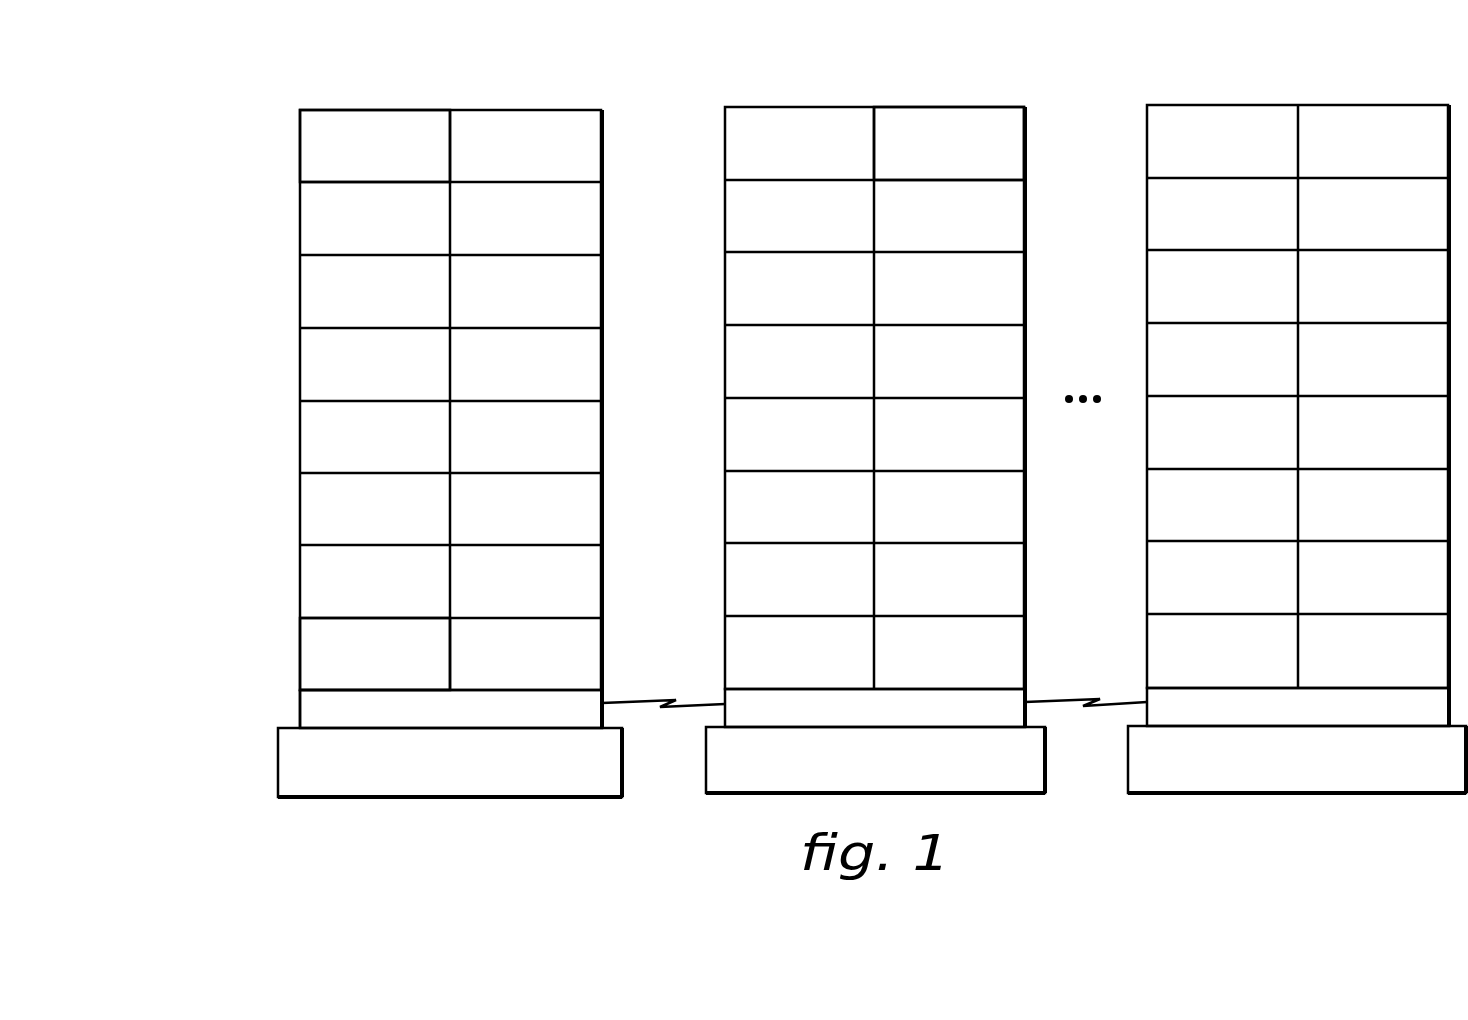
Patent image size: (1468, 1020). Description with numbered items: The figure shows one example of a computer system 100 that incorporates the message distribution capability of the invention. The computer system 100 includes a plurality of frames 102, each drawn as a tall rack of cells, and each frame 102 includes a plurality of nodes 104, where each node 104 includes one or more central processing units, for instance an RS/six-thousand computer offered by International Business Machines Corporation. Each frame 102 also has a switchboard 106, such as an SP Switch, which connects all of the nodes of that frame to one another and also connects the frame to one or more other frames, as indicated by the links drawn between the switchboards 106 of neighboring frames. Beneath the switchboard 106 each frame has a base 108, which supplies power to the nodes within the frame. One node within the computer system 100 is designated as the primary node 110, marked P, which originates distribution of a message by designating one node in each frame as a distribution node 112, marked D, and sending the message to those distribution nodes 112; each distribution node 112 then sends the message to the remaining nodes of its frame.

The computer system 100 is at (782, 63).
The frame 102 is at (292, 379).
The node 104 is at (341, 125).
The switchboard 106 is at (300, 708).
The base 108 is at (278, 770).
The primary node 110 is at (307, 643).
The distribution node 112 is at (977, 113).